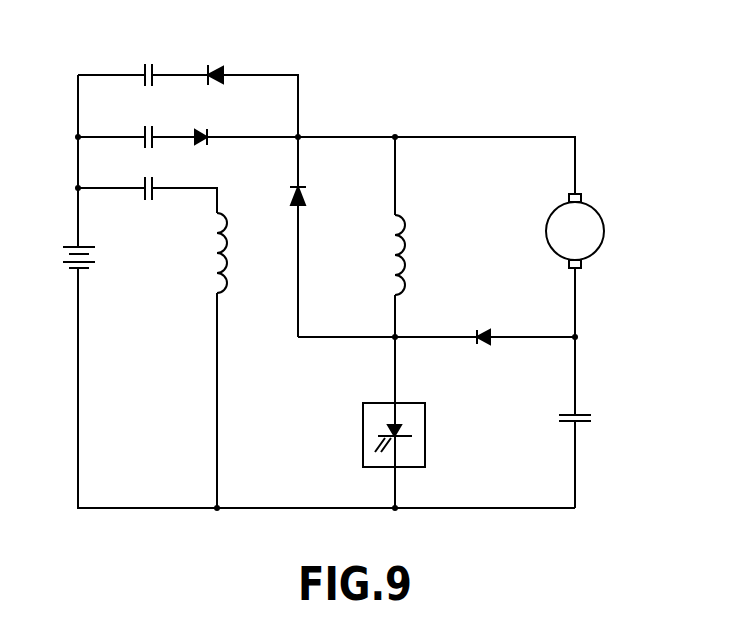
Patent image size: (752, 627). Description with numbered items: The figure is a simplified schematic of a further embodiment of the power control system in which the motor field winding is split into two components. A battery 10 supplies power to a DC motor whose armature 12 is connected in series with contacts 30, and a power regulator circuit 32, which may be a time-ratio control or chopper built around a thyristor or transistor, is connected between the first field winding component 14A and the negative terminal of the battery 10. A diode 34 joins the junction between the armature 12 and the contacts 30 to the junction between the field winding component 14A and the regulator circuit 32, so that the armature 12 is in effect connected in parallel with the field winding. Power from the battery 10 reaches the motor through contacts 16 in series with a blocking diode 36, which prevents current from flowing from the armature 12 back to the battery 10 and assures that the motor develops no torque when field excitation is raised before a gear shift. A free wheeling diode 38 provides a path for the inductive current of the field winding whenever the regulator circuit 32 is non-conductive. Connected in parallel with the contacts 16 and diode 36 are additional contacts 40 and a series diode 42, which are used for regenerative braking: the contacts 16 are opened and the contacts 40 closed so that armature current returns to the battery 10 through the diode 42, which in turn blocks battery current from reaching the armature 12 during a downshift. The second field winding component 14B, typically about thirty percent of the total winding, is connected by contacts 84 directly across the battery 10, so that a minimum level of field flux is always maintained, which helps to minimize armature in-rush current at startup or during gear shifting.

The battery 10 is at (56, 253).
The armature 12 is at (597, 210).
The first component of motor field winding 14A is at (409, 249).
The second component of motor field winding 14B is at (229, 253).
The contacts 16 is at (158, 122).
The contacts 30 is at (592, 417).
The power regulator circuit 32 is at (430, 428).
The diode 34 is at (488, 323).
The blocking diode 36 is at (229, 122).
The free wheeling diode 38 is at (311, 198).
The contacts 40 is at (150, 62).
The diode 42 is at (212, 64).
The contacts 84 is at (148, 204).